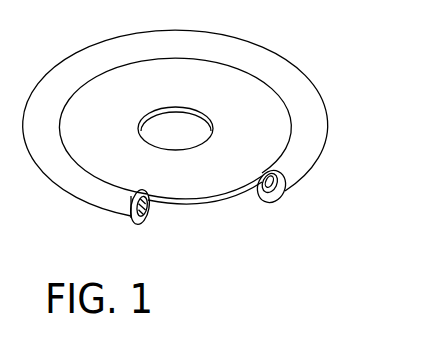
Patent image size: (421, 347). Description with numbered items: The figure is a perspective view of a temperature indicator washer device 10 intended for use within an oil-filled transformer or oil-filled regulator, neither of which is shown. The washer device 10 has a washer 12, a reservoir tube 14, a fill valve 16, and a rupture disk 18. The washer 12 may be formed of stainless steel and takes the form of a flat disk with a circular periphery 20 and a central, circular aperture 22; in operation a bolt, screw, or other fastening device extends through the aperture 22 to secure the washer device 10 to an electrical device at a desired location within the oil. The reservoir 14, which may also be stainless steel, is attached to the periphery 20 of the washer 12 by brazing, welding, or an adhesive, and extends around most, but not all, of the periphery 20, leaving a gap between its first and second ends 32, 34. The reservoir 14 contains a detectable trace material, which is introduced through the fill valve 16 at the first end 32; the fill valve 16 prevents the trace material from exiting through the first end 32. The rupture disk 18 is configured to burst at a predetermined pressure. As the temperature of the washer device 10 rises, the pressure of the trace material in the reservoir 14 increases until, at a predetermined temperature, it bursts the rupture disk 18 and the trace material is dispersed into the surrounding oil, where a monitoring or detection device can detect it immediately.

The temperature indicator washer device 10 is at (221, 147).
The washer 12 is at (121, 120).
The reservoir tube 14 is at (307, 112).
The fill valve 16 is at (148, 223).
The rupture disk 18 is at (282, 201).
The circular periphery 20 is at (210, 199).
The central circular aperture 22 is at (188, 142).
The first end 32 is at (292, 175).
The second end 34 is at (117, 201).